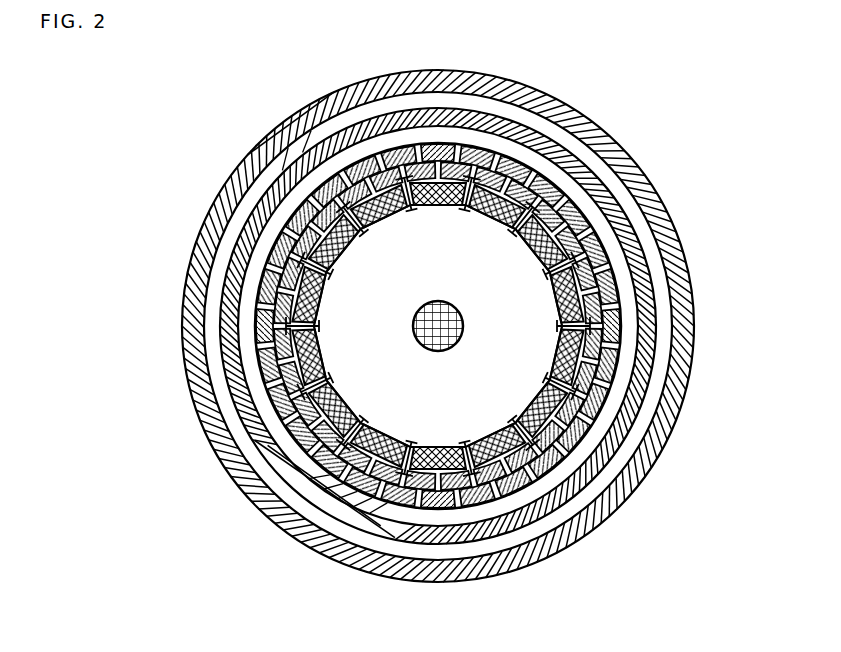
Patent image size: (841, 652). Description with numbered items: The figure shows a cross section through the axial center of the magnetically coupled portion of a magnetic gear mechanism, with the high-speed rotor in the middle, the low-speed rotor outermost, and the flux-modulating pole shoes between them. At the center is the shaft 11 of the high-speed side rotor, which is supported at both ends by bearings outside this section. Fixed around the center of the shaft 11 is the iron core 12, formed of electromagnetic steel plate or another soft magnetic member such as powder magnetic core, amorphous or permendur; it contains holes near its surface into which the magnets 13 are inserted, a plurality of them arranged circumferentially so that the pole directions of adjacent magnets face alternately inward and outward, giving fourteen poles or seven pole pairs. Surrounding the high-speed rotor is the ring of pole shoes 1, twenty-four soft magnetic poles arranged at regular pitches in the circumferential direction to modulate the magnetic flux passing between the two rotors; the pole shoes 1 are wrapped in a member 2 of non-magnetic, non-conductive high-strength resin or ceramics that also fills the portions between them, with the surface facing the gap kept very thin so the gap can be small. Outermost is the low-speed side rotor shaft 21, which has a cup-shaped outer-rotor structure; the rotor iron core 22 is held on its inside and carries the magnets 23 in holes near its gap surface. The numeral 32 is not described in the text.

The pole shoe 1 is at (580, 239).
The member 2 is at (583, 258).
The shaft 11 is at (417, 310).
The iron core 12 is at (353, 298).
The magnets 13 is at (317, 352).
The low-speed side rotor shaft 21 is at (282, 471).
The rotor iron core 22 is at (325, 483).
The magnets 23 is at (372, 490).
The outer sheath 32 is at (310, 104).